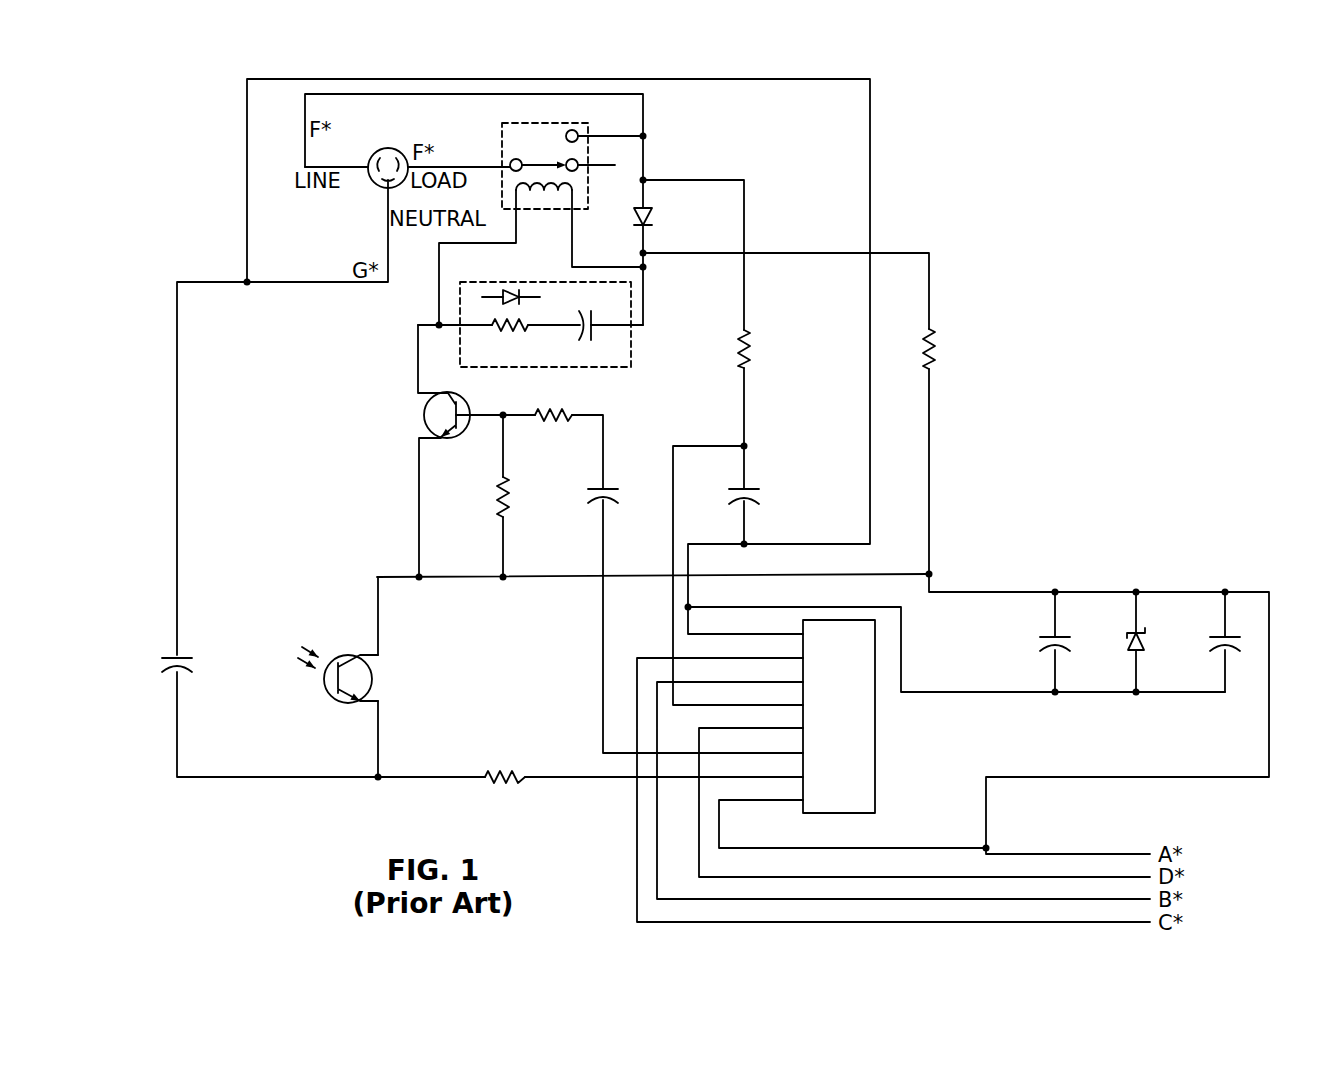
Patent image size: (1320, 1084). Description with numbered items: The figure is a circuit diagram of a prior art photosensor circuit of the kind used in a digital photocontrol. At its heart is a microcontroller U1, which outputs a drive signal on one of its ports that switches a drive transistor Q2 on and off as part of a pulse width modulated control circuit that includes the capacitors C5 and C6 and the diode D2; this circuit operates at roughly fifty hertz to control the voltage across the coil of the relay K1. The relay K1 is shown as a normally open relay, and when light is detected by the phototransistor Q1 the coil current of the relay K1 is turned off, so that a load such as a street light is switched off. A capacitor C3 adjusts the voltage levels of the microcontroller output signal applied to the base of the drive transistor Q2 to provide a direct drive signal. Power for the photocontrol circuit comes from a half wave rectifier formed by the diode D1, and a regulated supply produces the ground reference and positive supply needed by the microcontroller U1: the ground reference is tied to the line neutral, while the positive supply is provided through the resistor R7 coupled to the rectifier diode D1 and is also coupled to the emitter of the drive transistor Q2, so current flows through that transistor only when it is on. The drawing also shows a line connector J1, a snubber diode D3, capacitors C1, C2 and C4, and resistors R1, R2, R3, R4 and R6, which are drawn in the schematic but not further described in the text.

The power connector (LINE/LOAD/NEUTRAL) J1 is at (380, 198).
The relay K1 is at (572, 153).
The diode D1 is at (664, 161).
The diode D2 is at (1136, 605).
The diode D3 is at (545, 312).
The capacitor C1 is at (195, 665).
The capacitor C2 is at (589, 314).
The capacitor C3 is at (586, 500).
The capacitor C4 is at (765, 500).
The capacitor C5 is at (1055, 606).
The capacitor C6 is at (1225, 606).
The resistor R1 is at (505, 791).
The resistor R2 is at (510, 339).
The resistor R3 is at (553, 401).
The resistor R4 is at (761, 349).
The resistor R6 is at (485, 497).
The resistor R7 is at (947, 349).
The phototransistor Q1 is at (338, 665).
The drive transistor Q2 is at (427, 415).
The microcontroller U1 is at (854, 729).